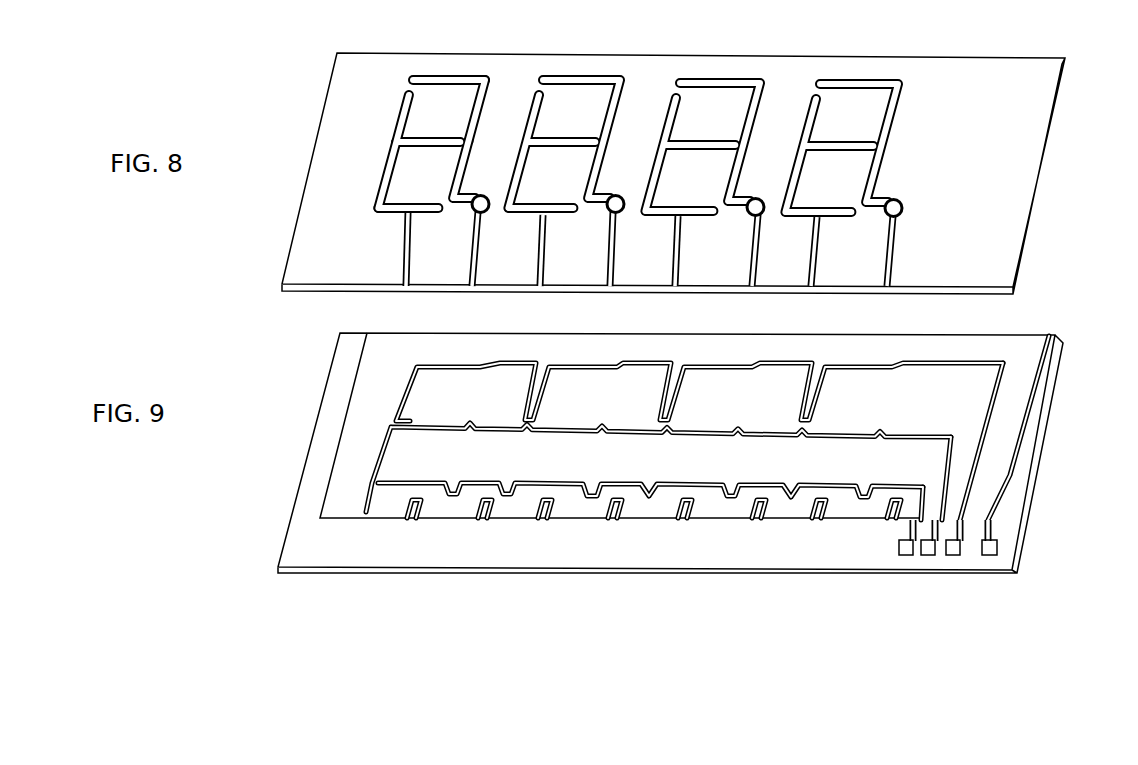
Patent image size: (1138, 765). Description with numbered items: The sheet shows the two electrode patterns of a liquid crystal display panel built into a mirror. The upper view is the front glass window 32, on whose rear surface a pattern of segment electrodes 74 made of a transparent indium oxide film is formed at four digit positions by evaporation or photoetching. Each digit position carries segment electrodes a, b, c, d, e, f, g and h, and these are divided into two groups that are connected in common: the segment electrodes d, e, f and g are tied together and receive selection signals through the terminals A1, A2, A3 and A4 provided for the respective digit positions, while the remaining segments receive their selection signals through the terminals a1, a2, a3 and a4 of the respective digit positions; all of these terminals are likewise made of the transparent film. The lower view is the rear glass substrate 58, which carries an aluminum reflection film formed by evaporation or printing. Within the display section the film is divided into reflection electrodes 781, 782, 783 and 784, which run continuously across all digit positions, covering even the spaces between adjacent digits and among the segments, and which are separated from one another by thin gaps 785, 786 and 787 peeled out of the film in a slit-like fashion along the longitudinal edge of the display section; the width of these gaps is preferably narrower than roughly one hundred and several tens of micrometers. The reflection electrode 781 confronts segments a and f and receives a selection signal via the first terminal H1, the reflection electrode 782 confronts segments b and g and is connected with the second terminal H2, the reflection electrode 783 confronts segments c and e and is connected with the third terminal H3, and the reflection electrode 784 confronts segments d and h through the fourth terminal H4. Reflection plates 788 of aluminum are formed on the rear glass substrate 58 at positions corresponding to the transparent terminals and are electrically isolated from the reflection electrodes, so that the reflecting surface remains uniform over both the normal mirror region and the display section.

In FIG. 8, the front glass window 32 is at (392, 75).
In FIG. 8, the segment electrodes 74 is at (476, 72).
In FIG. 8, the segment electrode a is at (449, 66).
In FIG. 8, the segment electrode b is at (484, 110).
In FIG. 8, the segment electrode c is at (466, 169).
In FIG. 8, the segment electrode d is at (408, 194).
In FIG. 8, the segment electrode e is at (380, 175).
In FIG. 8, the segment electrode f is at (396, 118).
In FIG. 8, the segment electrode g is at (428, 125).
In FIG. 8, the segment electrode h is at (485, 197).
In FIG. 8, the terminal A1 is at (811, 280).
In FIG. 8, the terminal A2 is at (675, 280).
In FIG. 8, the terminal A3 is at (540, 278).
In FIG. 8, the terminal A4 is at (405, 278).
In FIG. 8, the terminal a1 is at (887, 280).
In FIG. 8, the terminal a2 is at (752, 280).
In FIG. 8, the terminal a3 is at (610, 278).
In FIG. 8, the terminal a4 is at (472, 278).
In FIG. 9, the rear glass substrate 58 is at (333, 548).
In FIG. 9, the reflection electrode 781 is at (372, 352).
In FIG. 9, the reflection electrode 782 is at (430, 388).
In FIG. 9, the reflection electrode 783 is at (400, 445).
In FIG. 9, the reflection electrode 784 is at (388, 500).
In FIG. 9, the thin gap 785 is at (983, 363).
In FIG. 9, the thin gap 786 is at (948, 433).
In FIG. 9, the thin gap 787 is at (838, 492).
In FIG. 9, the reflection plates 788 is at (412, 517).
In FIG. 9, the first terminal H1 is at (989, 557).
In FIG. 9, the second terminal H2 is at (958, 557).
In FIG. 9, the third terminal H3 is at (929, 557).
In FIG. 9, the fourth terminal H4 is at (907, 557).